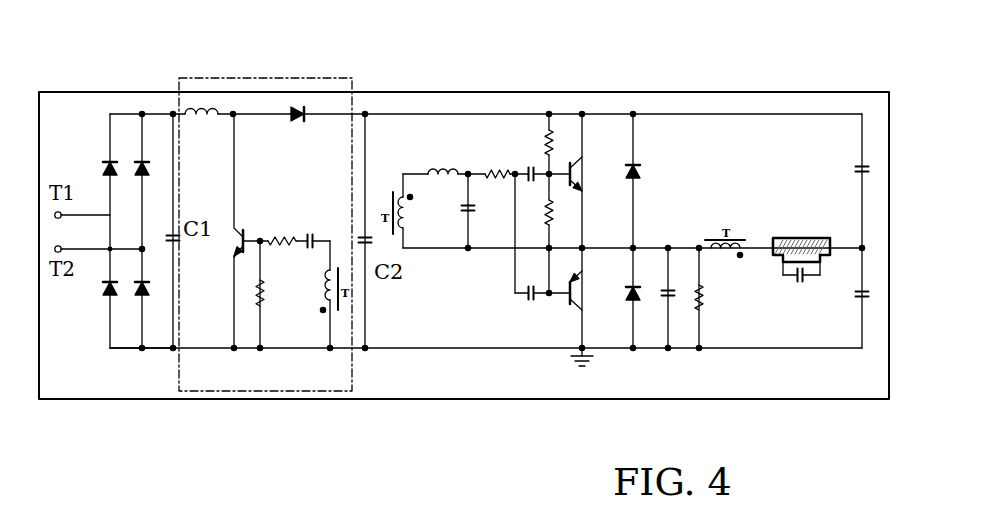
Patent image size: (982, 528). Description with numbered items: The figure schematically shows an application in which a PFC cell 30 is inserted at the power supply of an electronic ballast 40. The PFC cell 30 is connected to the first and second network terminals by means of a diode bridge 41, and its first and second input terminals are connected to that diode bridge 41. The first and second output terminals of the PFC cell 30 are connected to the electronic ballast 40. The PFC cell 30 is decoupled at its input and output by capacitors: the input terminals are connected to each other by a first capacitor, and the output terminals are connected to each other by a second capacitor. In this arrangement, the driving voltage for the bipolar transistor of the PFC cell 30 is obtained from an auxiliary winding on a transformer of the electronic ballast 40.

The electronic ballast 40 is at (660, 72).
The diode bridge 41 is at (128, 133).
The PFC cell 30 is at (323, 381).